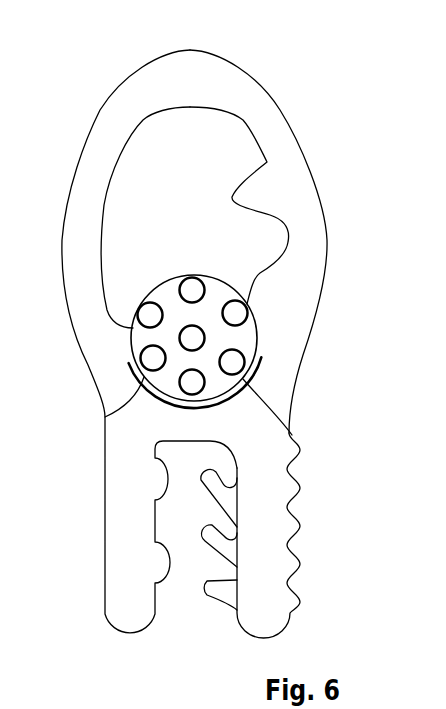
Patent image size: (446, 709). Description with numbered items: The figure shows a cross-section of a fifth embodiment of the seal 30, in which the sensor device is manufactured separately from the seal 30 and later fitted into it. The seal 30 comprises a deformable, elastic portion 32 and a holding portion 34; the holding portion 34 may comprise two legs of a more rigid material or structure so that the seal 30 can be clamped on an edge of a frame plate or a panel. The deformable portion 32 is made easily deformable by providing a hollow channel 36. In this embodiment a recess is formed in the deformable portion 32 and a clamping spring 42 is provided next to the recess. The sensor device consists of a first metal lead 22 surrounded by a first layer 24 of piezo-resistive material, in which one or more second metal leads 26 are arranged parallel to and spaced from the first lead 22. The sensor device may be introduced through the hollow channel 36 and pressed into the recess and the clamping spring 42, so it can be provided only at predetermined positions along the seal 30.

The seal 30 is at (237, 46).
The deformable portion 32 is at (195, 94).
The hollow channel 36 is at (173, 212).
The first metal lead 22 is at (270, 351).
The second metal lead 26 is at (235, 313).
The first layer 24 is at (213, 382).
The clamping spring 42 is at (150, 393).
The holding portion 34 is at (275, 564).